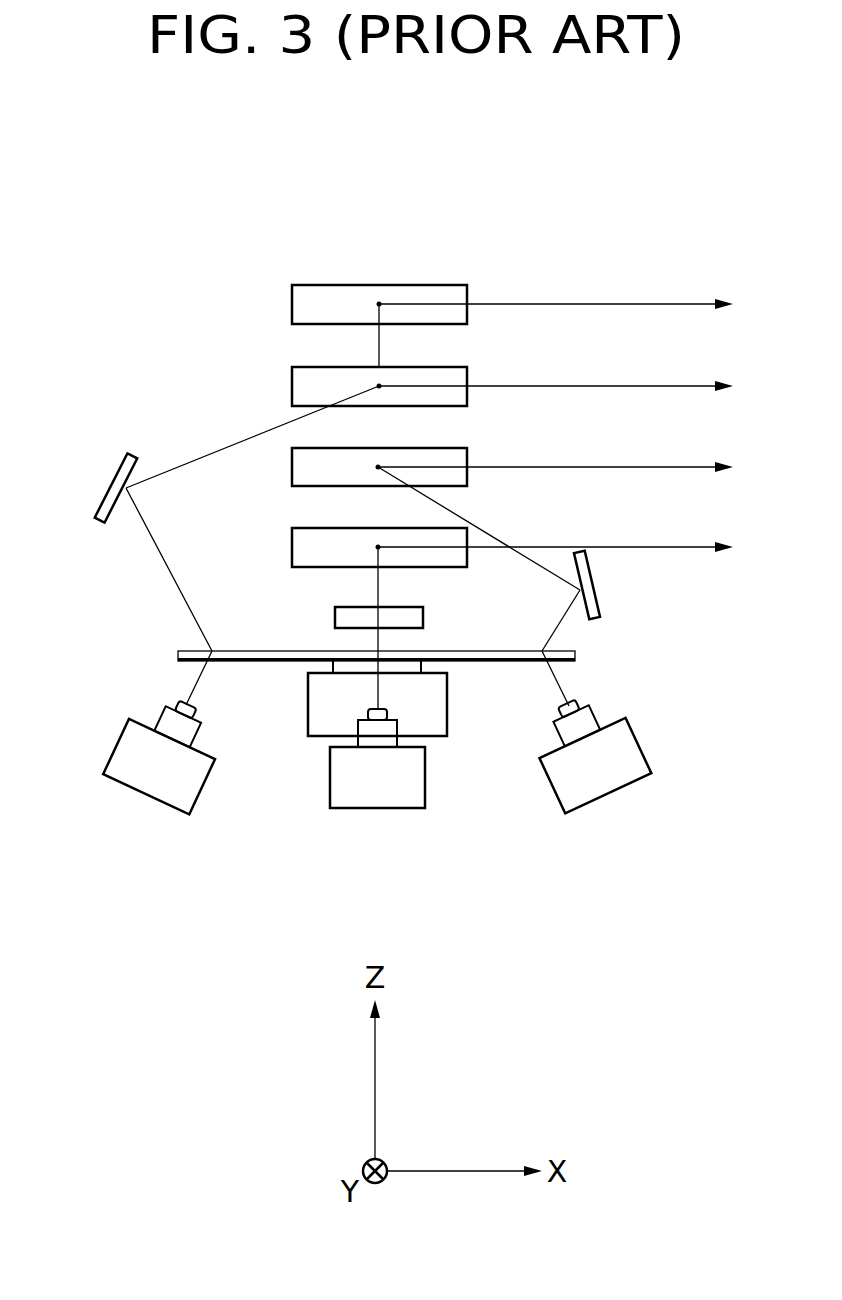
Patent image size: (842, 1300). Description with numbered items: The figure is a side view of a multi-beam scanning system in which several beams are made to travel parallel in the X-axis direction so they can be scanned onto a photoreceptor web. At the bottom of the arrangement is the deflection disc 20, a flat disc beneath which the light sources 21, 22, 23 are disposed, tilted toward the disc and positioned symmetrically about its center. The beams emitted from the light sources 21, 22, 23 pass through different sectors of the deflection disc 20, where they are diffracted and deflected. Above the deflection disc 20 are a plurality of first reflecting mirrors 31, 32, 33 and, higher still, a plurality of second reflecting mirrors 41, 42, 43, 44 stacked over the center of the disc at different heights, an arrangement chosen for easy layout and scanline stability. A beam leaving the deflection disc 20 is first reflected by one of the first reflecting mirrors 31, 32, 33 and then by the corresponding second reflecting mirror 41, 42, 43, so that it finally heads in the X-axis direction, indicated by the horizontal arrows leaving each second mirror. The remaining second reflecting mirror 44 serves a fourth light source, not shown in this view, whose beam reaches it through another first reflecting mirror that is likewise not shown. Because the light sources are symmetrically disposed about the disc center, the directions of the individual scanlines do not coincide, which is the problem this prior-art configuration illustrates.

The deflection disc 20 is at (178, 652).
The light source 21 is at (148, 800).
The light source 22 is at (375, 810).
The light source 23 is at (607, 800).
The first reflecting mirror 31 is at (118, 468).
The first reflecting mirror 32 is at (335, 618).
The first reflecting mirror 33 is at (597, 612).
The second reflecting mirror 41 is at (292, 385).
The second reflecting mirror 42 is at (292, 545).
The second reflecting mirror 43 is at (292, 464).
The second reflecting mirror 44 is at (292, 303).